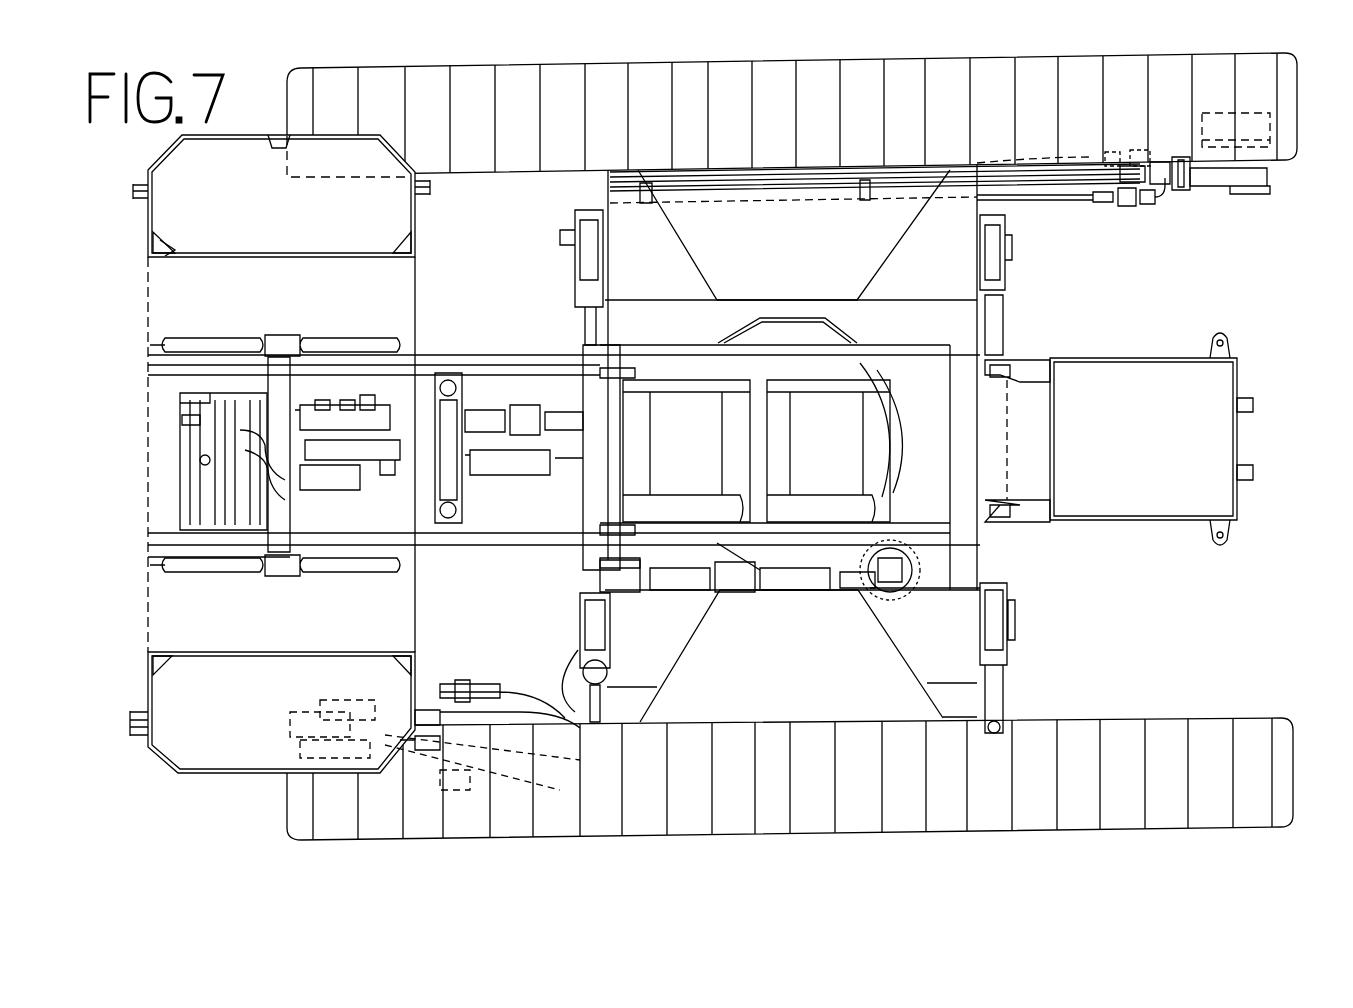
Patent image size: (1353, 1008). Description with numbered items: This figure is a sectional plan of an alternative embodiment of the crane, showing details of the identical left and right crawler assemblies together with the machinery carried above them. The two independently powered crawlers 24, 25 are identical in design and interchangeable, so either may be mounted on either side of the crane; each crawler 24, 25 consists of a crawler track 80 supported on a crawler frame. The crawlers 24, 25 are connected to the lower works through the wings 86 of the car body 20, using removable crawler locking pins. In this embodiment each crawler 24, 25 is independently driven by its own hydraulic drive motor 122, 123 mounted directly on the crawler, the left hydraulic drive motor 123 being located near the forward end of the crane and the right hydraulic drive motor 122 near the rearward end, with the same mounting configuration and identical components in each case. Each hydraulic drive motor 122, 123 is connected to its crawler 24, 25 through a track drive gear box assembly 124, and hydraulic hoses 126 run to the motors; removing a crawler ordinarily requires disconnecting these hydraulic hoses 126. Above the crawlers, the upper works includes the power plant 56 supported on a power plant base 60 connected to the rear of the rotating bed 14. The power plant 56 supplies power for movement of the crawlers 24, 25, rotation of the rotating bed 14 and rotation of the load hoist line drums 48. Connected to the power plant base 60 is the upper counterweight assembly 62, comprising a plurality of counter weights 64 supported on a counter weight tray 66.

The rotating bed 14 is at (932, 505).
The car body 20 is at (970, 343).
The crawler 24 is at (1077, 826).
The crawler 25 is at (1077, 43).
The load hoist line drums 48 is at (842, 427).
The power plant 56 is at (315, 460).
The power plant base 60 is at (300, 390).
The upper counterweight assembly 62 is at (152, 236).
The counter weights 64 is at (176, 170).
The counter weight tray 66 is at (172, 310).
The crawler track 80 is at (862, 118).
The wings 86 is at (640, 232).
The hydraulic drive motor 122 is at (427, 742).
The hydraulic drive motor 123 is at (1200, 183).
The track drive gear box assembly 124 is at (330, 735).
The hydraulic hoses 126 is at (472, 685).